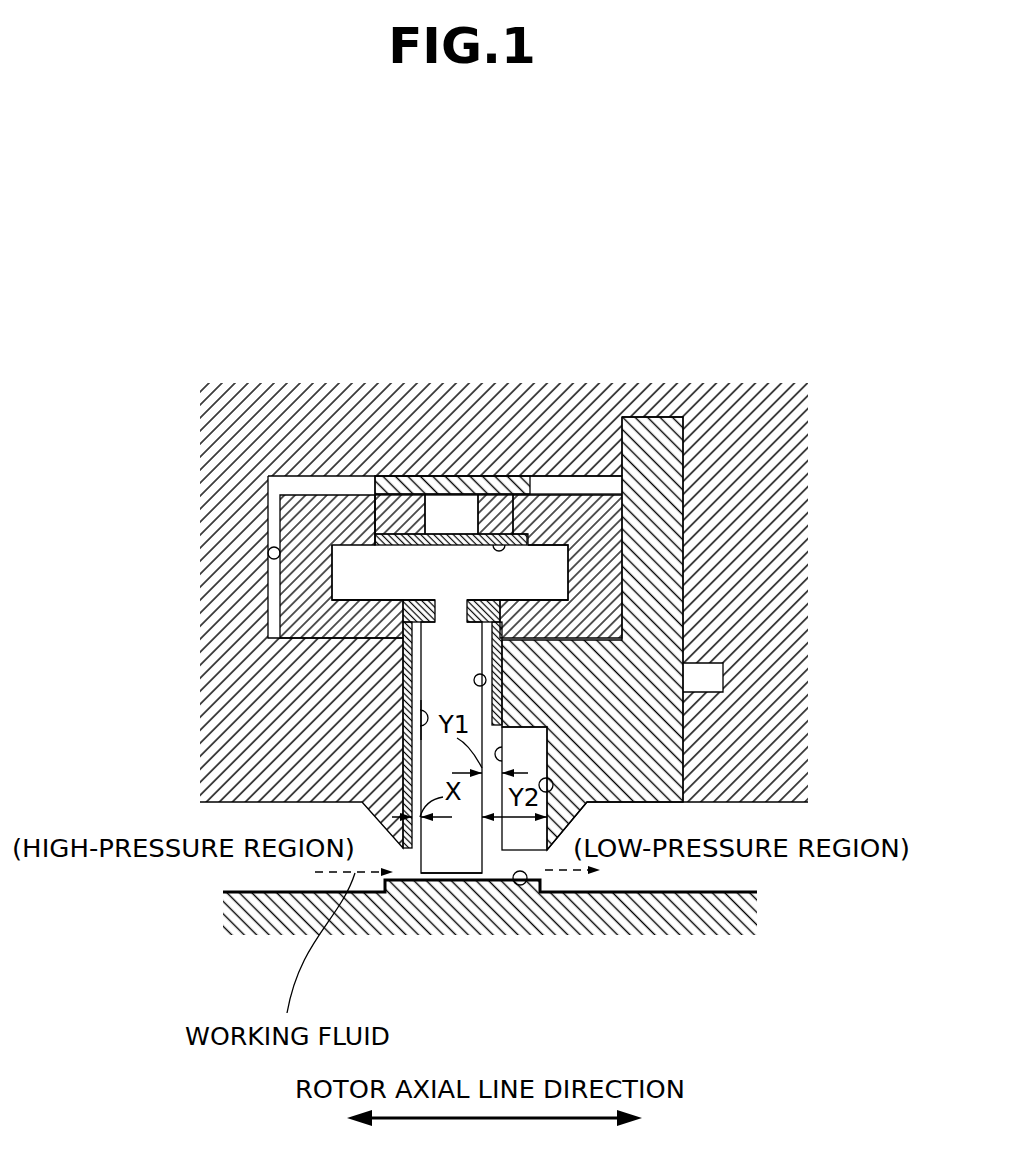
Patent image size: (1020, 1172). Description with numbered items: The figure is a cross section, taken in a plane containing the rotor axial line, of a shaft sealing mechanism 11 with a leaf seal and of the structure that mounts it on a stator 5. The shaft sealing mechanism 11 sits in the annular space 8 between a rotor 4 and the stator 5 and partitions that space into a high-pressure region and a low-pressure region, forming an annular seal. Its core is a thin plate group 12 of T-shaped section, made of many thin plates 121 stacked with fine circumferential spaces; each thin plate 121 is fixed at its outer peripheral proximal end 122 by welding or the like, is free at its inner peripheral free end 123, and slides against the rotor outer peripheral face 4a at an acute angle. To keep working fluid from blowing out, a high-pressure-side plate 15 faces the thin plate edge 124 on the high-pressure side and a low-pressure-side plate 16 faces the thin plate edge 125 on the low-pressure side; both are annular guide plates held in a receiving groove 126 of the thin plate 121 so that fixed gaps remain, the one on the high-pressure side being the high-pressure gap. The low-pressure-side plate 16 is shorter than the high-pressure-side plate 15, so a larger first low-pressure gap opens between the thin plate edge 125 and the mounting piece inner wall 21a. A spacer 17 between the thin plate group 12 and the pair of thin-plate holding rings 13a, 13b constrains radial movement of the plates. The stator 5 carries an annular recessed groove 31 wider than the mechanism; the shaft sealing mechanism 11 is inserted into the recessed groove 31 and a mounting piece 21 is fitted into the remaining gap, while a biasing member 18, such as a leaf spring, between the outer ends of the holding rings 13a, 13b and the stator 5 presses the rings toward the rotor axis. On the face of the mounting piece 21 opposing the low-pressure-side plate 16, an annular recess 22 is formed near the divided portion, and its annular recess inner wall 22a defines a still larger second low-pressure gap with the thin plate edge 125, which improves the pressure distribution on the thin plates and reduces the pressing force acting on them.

The rotor 4 is at (625, 935).
The rotor outer peripheral face 4a is at (522, 886).
The stator 5 is at (570, 383).
The annular space 8 is at (278, 882).
The shaft sealing mechanism 11 is at (233, 433).
The thin plate group 12 is at (495, 663).
The thin plate 121 is at (451, 747).
The outer peripheral proximal end 122 is at (517, 540).
The inner peripheral free end 123 is at (427, 880).
The thin plate edge 124 is at (420, 729).
The thin plate edge 125 is at (483, 680).
The receiving groove 126 is at (403, 602).
The thin-plate holding ring 13a is at (297, 537).
The thin-plate holding ring 13b is at (576, 510).
The high-pressure-side plate 15 is at (402, 687).
The low-pressure-side plate 16 is at (502, 703).
The spacer 17 is at (383, 537).
The biasing member 18 is at (440, 482).
The mounting piece 21 is at (668, 485).
The mounting piece inner wall 21a is at (505, 742).
The annular recess 22 is at (533, 757).
The annular recess inner wall 22a is at (550, 787).
The recessed groove 31 is at (268, 553).